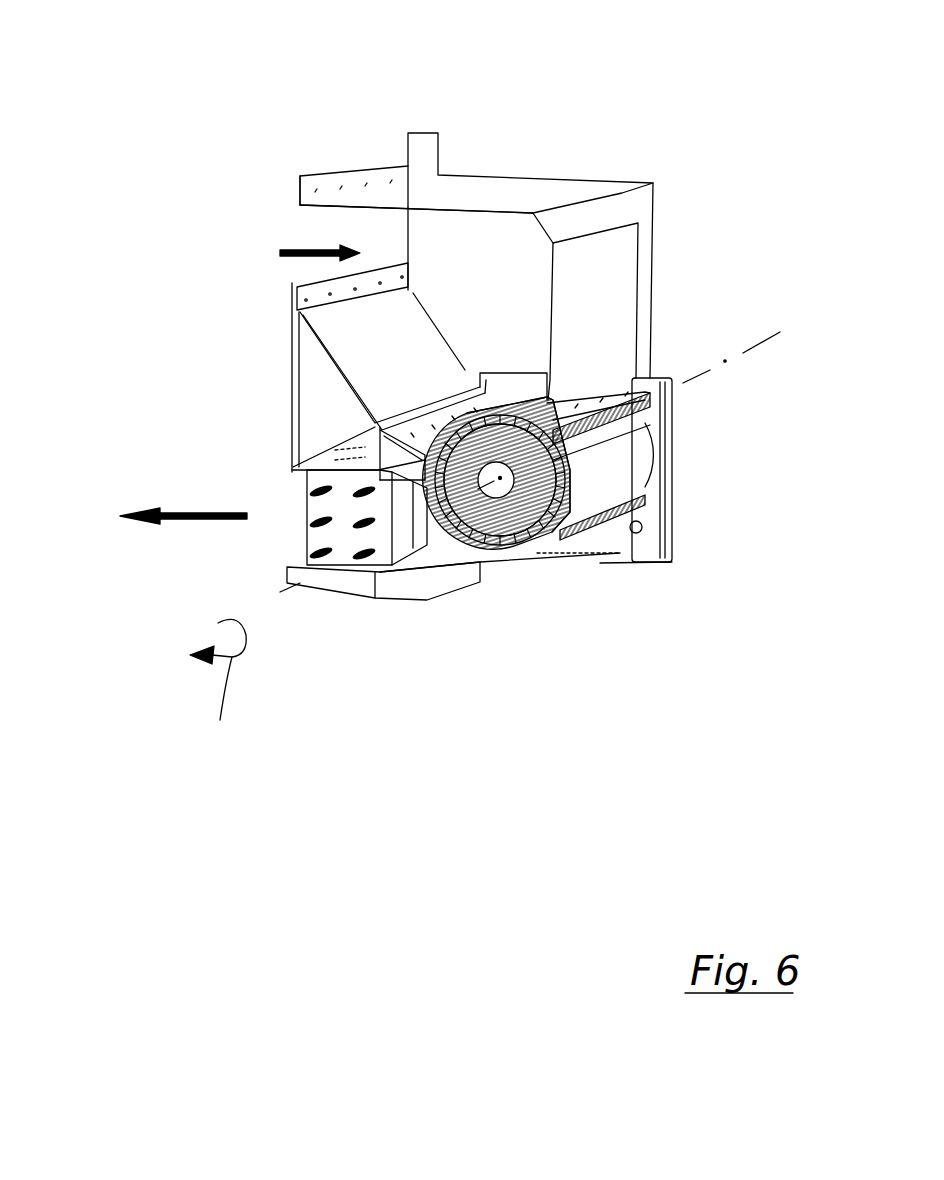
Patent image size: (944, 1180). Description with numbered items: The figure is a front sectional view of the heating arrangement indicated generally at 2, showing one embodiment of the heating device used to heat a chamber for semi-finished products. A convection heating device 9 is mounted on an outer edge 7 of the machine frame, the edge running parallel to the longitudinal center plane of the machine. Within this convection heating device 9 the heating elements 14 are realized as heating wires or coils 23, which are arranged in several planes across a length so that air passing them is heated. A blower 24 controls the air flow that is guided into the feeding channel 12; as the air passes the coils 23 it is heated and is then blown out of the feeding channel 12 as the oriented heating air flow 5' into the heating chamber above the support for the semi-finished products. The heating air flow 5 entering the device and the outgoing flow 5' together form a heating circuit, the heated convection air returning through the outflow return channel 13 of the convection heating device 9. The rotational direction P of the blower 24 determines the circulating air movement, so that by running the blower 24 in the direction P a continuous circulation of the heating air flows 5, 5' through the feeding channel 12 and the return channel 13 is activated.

The apparatus 2 is at (676, 122).
The outer edge 7 is at (372, 166).
The heating air flow 5 is at (307, 199).
The heating air flow 5' is at (183, 465).
The outflow return channel 13 is at (480, 330).
The heating wires or coils 23 is at (305, 520).
The feeding channel 12 is at (280, 545).
The heating elements 14 is at (360, 590).
The blower 24 is at (520, 532).
The convection heating device 9 is at (735, 285).
The rotational direction P is at (218, 702).